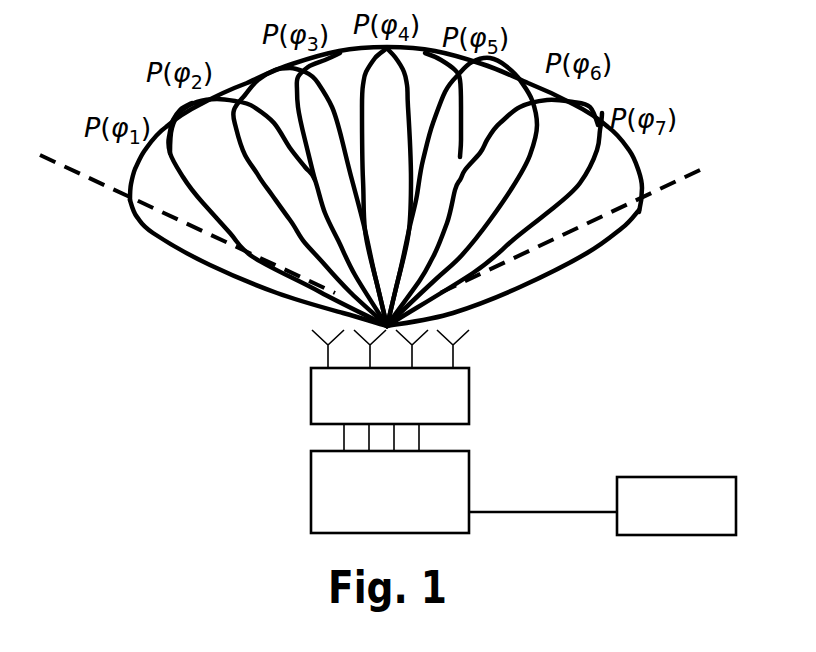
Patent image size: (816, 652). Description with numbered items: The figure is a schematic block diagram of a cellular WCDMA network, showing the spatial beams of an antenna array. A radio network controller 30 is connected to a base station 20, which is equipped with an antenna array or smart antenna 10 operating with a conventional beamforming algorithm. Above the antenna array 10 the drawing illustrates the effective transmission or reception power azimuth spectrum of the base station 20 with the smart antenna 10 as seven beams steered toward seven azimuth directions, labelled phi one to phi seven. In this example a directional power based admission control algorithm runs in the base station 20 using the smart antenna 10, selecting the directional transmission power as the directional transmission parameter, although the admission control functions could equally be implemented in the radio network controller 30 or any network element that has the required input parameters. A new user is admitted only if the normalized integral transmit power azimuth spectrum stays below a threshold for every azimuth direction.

The antenna array 10 is at (390, 377).
The base station 20 is at (390, 492).
The radio network controller 30 is at (676, 506).